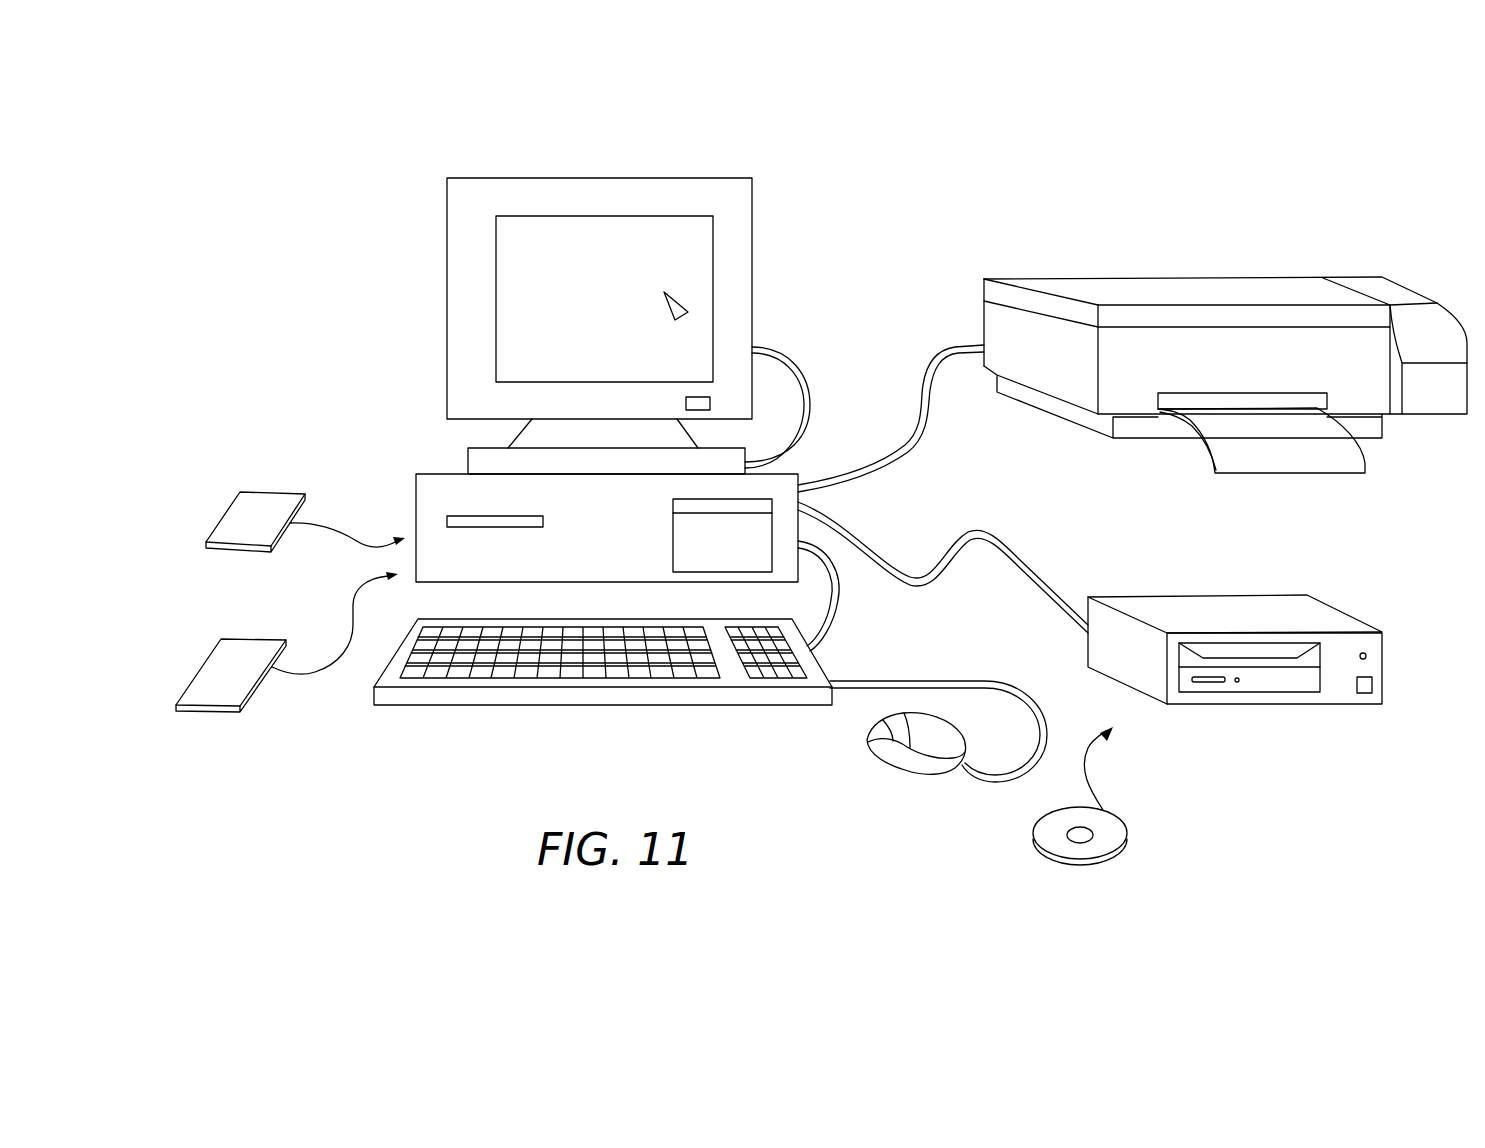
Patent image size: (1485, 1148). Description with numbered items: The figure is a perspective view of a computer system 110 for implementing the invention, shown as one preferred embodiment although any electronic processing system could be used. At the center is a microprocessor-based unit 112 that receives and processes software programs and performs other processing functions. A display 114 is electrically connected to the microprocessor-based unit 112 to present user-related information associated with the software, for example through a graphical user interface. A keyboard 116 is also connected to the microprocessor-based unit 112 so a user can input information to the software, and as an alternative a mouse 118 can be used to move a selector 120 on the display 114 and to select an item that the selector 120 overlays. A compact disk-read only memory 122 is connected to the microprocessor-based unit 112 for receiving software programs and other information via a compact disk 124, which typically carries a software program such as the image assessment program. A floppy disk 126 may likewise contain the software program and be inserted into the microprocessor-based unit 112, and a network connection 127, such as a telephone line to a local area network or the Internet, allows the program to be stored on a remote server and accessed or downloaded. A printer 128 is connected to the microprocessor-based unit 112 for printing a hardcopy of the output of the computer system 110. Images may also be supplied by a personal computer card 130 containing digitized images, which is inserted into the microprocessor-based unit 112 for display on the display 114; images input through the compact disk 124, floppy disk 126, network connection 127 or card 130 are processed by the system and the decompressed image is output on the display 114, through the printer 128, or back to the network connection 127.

The computer system 110 is at (830, 228).
The microprocessor-based unit 112 is at (441, 473).
The display 114 is at (568, 178).
The keyboard 116 is at (423, 706).
The mouse 118 is at (908, 767).
The selector 120 is at (684, 304).
The compact disk-read only memory (CD-ROM) 122 is at (1198, 597).
The compact disk 124 is at (1128, 833).
The floppy disk 126 is at (240, 508).
The network connection 127 is at (416, 520).
The printer 128 is at (1183, 279).
The personal computer card (PC card) 130 is at (222, 656).